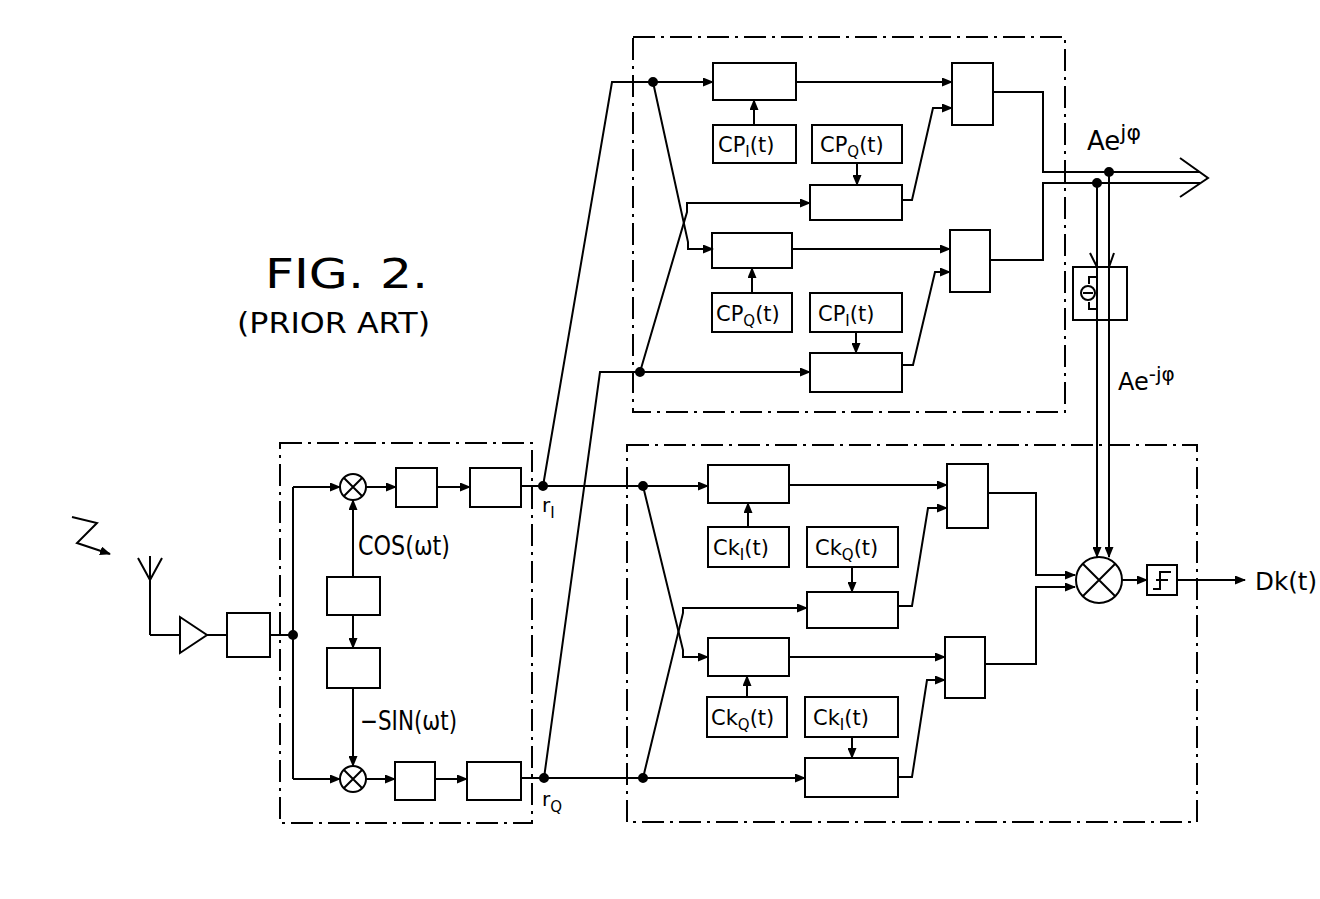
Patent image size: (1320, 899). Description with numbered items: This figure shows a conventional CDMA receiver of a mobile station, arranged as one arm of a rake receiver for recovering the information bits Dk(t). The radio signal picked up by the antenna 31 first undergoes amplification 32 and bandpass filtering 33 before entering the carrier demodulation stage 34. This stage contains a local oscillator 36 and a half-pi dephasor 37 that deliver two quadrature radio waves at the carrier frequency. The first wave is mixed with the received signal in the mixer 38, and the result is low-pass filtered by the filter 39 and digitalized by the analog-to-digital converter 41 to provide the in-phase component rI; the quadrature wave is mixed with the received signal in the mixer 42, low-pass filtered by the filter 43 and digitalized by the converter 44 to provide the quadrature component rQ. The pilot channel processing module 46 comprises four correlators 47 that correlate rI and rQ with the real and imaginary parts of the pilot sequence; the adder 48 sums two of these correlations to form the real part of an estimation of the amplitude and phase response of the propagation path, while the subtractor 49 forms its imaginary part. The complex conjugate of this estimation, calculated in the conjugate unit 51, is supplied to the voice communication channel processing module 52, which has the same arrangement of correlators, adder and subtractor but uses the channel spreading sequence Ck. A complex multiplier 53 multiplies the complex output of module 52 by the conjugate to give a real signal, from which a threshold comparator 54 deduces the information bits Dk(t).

The antenna 31 is at (142, 584).
The amplification 32 is at (197, 616).
The bandpass filtering 33 is at (240, 658).
The carrier demodulation stage 34 is at (276, 487).
The local oscillator 36 is at (380, 595).
The π/2 dephasor 37 is at (380, 667).
The mixer 38 is at (350, 472).
The low-pass filter 39 is at (422, 466).
The analog-to-digital converter 41 is at (497, 507).
The mixer 42 is at (348, 792).
The low-pass filter 43 is at (412, 800).
The analog-to-digital converter 44 is at (498, 760).
The pilot channel processing module 46 is at (1068, 83).
The correlator 47 is at (777, 62).
The adder 48 is at (985, 126).
The subtractor 49 is at (978, 293).
The complex conjugate calculator 51 is at (1128, 296).
The voice communication channel processing module 52 is at (993, 822).
The complex multiplier 53 is at (1097, 603).
The threshold comparator 54 is at (1158, 564).